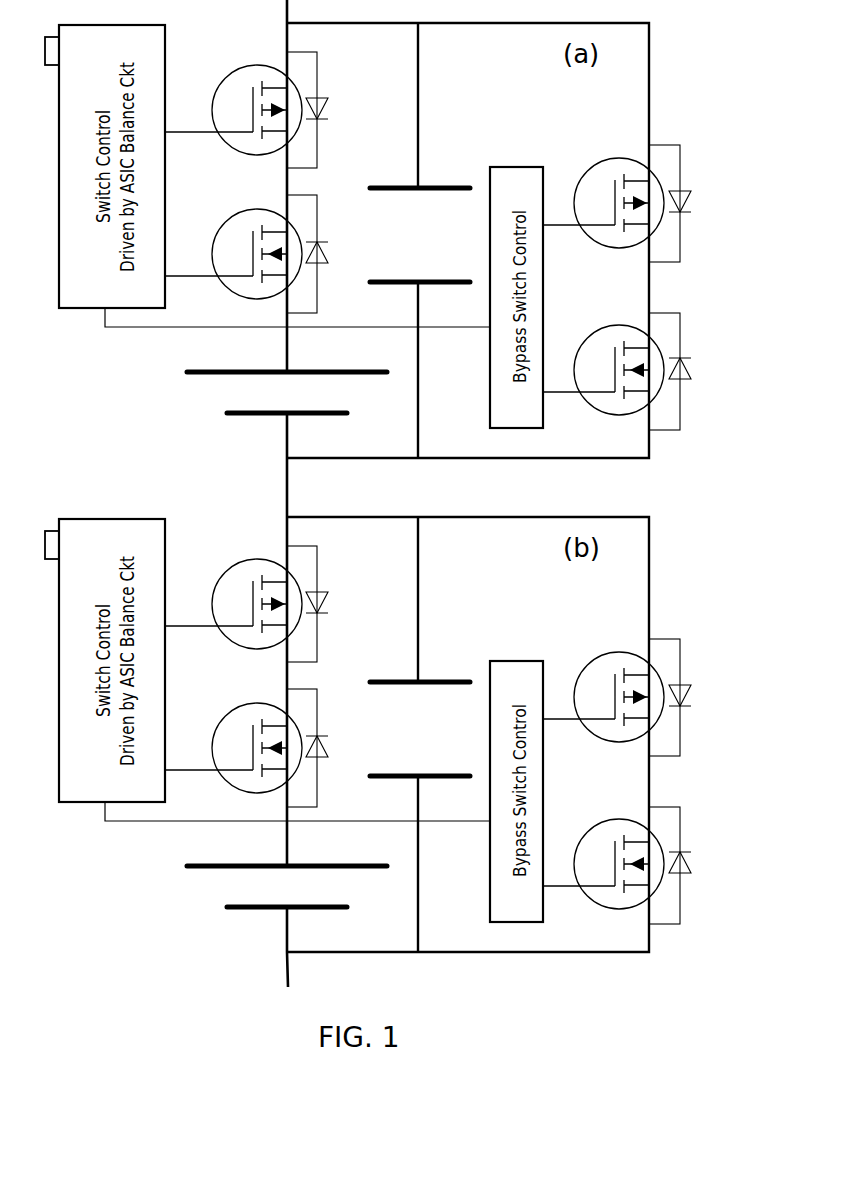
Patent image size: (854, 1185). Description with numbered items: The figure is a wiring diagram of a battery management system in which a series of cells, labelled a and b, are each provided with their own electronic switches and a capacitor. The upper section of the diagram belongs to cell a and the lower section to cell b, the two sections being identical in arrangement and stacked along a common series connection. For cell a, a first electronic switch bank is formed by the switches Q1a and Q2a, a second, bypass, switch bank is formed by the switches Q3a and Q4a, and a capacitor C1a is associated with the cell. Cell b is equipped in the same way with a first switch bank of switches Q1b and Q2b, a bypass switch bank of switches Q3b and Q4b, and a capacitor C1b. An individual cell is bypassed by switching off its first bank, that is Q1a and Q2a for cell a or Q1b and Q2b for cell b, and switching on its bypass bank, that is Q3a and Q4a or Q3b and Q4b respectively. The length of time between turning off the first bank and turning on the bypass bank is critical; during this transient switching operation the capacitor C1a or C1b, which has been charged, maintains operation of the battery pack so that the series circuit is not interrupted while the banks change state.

The electronic switch Q1a is at (276, 110).
The electronic switch Q2a is at (276, 254).
The electronic switch Q3a is at (648, 203).
The electronic switch Q4a is at (648, 371).
The capacitor C1a is at (427, 213).
The electronic switch Q1b is at (277, 604).
The electronic switch Q2b is at (277, 748).
The electronic switch Q3b is at (648, 697).
The electronic switch Q4b is at (648, 865).
The capacitor C1b is at (427, 707).